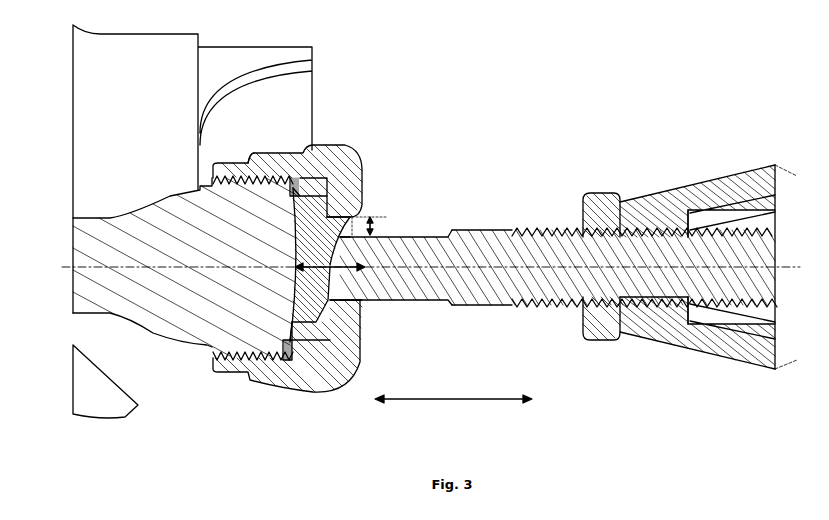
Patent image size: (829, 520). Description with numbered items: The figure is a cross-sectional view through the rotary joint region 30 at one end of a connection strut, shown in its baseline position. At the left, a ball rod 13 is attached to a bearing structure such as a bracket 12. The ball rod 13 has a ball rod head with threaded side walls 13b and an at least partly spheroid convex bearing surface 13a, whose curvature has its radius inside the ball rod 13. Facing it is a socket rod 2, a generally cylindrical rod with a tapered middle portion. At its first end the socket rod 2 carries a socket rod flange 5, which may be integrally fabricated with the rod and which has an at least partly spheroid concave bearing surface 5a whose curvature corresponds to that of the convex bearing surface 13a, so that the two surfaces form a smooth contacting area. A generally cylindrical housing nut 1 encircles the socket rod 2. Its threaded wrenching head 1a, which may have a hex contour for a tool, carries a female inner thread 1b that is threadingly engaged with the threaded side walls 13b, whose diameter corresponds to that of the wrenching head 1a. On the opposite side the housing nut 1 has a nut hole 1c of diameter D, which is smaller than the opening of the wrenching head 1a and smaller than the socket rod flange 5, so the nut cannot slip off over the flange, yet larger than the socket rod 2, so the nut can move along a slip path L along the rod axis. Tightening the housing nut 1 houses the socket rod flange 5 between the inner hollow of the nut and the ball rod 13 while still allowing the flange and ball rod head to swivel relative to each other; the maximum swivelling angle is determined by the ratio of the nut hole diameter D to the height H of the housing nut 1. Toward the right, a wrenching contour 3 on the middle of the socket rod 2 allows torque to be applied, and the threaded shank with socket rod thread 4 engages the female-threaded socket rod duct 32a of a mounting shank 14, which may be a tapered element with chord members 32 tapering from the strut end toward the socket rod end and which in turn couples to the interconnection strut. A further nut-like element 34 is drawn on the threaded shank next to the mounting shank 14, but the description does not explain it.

The housing nut 1 is at (340, 148).
The threaded wrenching head 1a is at (228, 163).
The inner thread 1b is at (268, 153).
The nut hole 1c is at (355, 312).
The socket rod 2 is at (420, 237).
The wrenching contour 3 is at (488, 230).
The socket rod thread 4 is at (540, 230).
The socket rod flange 5 is at (310, 330).
The concave bearing surface 5a is at (297, 297).
The bracket 12 is at (73, 122).
The ball rod 13 is at (152, 335).
The convex bearing surface 13a is at (293, 245).
The threaded side walls 13b is at (225, 362).
The mounting shank 14 is at (712, 365).
The rotary joint region 30 is at (507, 102).
The chord members 32 is at (716, 186).
The female-threaded socket rod duct 32a is at (660, 276).
The lock nut 34 is at (601, 193).
The height of the housing nut H is at (333, 258).
The diameter of the nut hole D is at (377, 218).
The slip path L is at (443, 402).